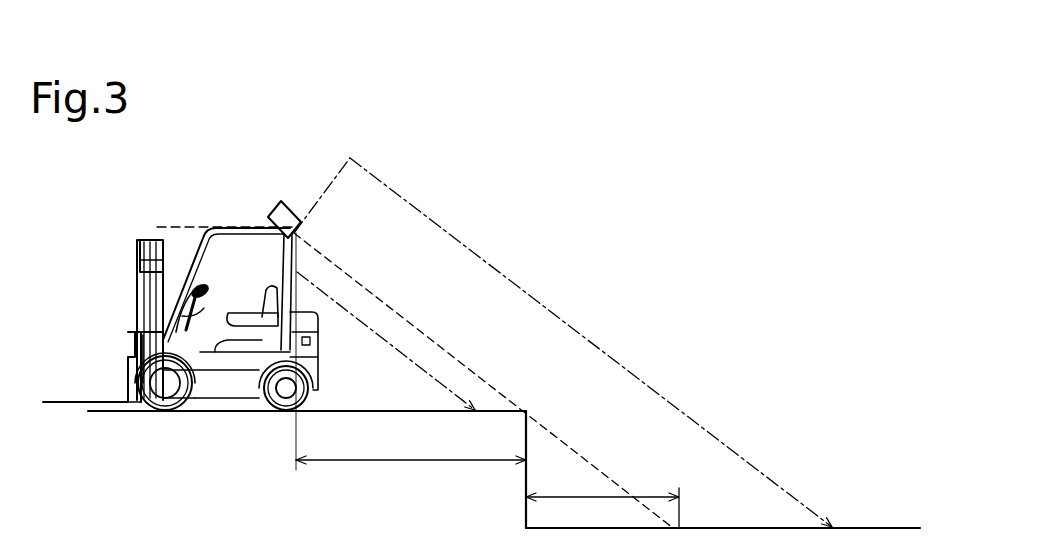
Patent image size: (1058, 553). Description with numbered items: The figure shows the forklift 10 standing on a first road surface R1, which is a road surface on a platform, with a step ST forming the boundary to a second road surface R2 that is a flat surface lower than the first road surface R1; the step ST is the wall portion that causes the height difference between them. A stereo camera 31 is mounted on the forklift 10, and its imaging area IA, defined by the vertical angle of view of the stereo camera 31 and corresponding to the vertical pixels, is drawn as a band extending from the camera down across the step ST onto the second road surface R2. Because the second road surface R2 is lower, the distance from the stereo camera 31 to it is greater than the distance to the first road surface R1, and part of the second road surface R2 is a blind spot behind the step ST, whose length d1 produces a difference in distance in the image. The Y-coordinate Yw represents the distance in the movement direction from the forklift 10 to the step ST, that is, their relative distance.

The forklift 10 is at (134, 238).
The stereo camera 31 is at (287, 203).
The imaging area IA is at (442, 228).
The first road surface R1 is at (500, 410).
The step ST is at (527, 427).
The second road surface R2 is at (862, 527).
The Y-coordinate Yw is at (411, 475).
The length of blind spot portion d1 is at (602, 499).